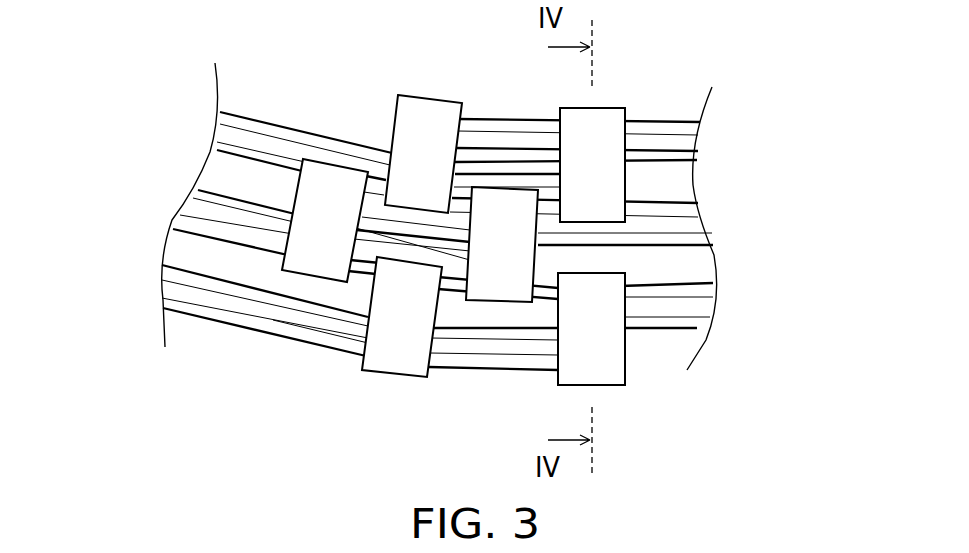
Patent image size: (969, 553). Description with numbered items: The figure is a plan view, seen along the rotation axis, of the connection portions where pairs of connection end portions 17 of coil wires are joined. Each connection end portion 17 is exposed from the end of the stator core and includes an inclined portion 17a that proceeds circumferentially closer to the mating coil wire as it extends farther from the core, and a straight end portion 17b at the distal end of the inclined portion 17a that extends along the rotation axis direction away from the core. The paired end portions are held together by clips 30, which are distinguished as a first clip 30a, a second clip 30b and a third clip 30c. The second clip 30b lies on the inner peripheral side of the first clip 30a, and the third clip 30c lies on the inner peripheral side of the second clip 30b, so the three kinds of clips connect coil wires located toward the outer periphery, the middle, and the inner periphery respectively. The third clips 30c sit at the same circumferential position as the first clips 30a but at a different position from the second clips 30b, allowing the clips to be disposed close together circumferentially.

The connection end portion 17 is at (247, 114).
The inclined portion 17a is at (295, 323).
The straight end portion 17b is at (360, 340).
The clip 30 is at (391, 239).
The first clip 30a is at (397, 363).
The second clip 30b is at (318, 198).
The third clip 30c is at (580, 100).